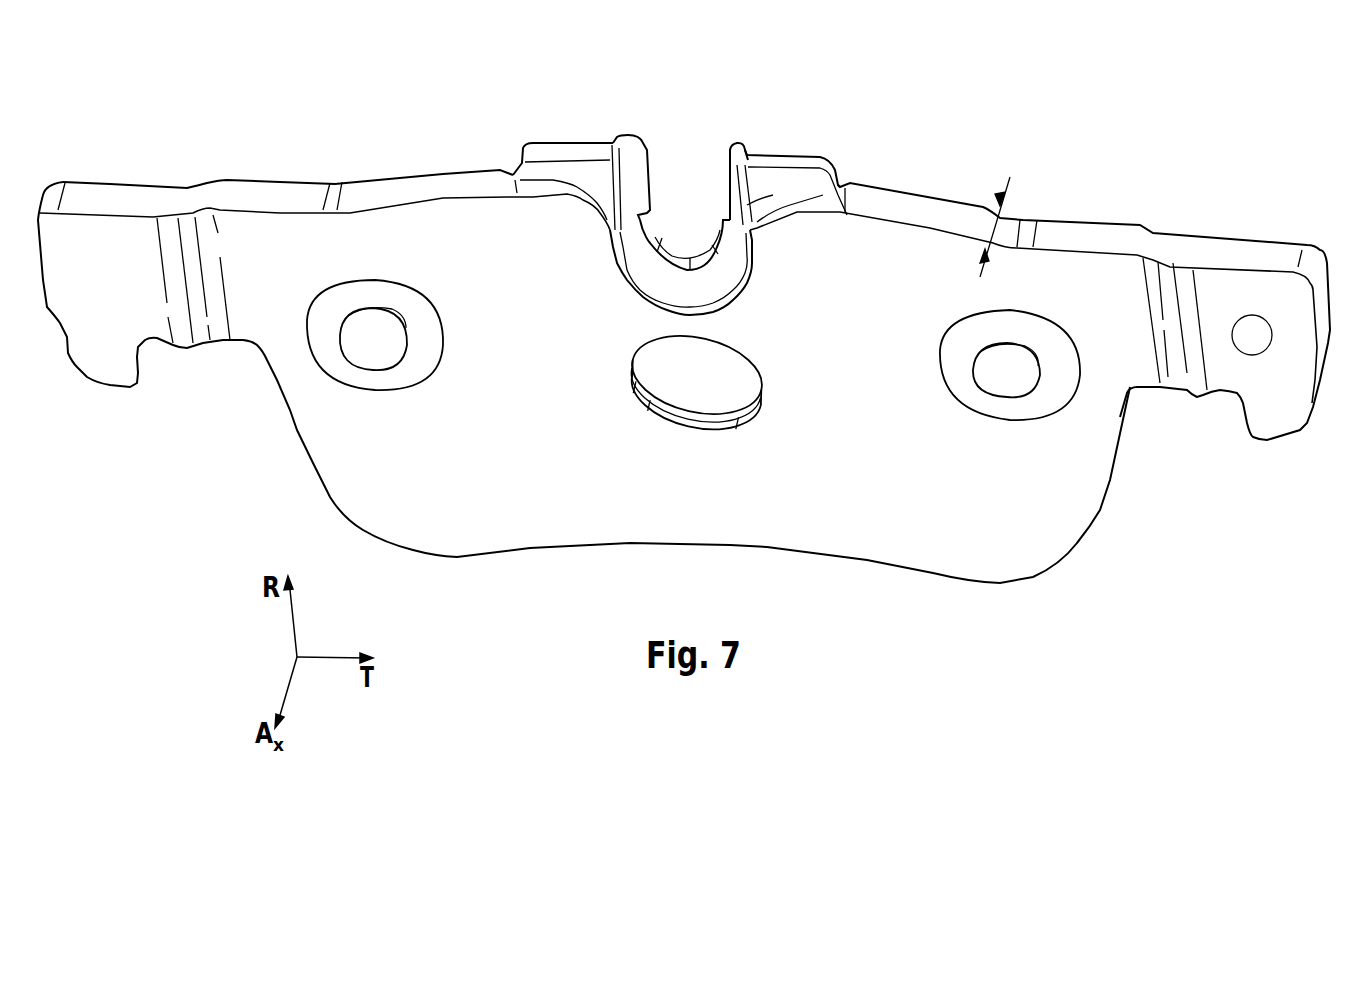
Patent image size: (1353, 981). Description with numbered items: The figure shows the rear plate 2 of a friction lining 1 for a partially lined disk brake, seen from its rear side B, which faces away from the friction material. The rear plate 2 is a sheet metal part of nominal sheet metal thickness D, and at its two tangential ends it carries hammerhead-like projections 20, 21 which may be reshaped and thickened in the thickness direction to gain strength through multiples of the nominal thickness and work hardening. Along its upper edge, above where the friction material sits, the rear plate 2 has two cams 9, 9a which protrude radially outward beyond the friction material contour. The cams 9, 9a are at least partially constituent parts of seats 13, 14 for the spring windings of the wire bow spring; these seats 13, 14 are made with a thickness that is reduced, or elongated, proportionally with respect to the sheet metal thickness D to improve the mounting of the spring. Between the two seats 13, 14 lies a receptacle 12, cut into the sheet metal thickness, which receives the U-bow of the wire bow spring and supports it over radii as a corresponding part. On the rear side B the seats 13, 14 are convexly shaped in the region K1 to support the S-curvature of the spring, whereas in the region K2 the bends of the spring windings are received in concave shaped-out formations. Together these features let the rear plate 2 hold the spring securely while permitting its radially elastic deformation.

The friction lining 1 is at (284, 174).
The rear plate 2 is at (395, 194).
The cam 9 is at (813, 152).
The cam 9a is at (553, 142).
The receptacle 12 is at (663, 224).
The seat 13 is at (590, 168).
The seat 14 is at (763, 180).
The projection 20 is at (200, 327).
The projection 21 is at (1177, 377).
The region K1 is at (535, 207).
The region K2 is at (623, 285).
The sheet metal thickness D is at (993, 225).
The rear side B is at (1252, 335).